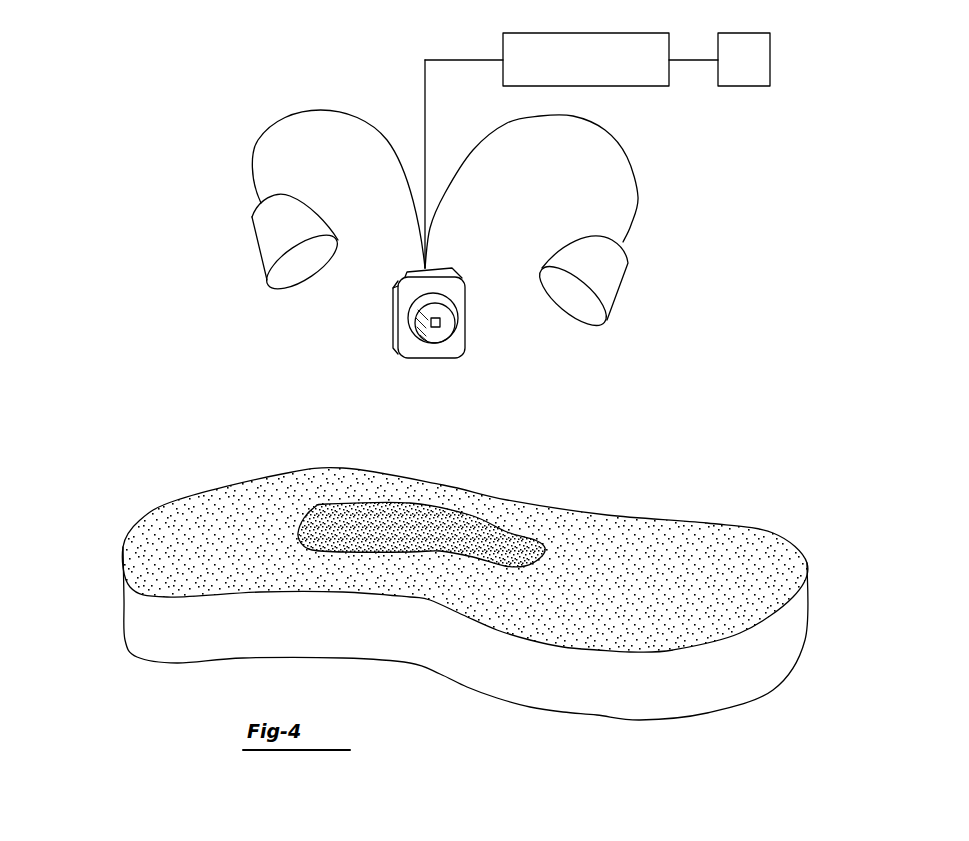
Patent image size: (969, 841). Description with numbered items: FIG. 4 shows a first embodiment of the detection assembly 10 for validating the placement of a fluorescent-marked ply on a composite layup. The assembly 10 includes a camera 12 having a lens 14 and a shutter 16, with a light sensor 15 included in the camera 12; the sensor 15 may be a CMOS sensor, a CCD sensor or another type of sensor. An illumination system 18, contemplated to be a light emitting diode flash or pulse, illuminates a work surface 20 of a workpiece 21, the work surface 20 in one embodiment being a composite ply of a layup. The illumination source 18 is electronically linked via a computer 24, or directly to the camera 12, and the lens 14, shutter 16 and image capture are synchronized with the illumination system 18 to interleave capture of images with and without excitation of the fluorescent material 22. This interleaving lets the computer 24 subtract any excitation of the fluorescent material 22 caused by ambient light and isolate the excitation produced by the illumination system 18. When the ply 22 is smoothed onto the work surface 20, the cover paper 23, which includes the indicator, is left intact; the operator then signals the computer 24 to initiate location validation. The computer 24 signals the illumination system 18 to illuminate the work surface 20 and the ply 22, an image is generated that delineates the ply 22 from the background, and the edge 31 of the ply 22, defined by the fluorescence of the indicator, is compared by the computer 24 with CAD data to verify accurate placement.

The detection assembly 10 is at (264, 64).
The camera 12 is at (465, 343).
The lens 14 is at (445, 309).
The light sensor 15 is at (438, 326).
The shutter 16 is at (415, 336).
The illumination system 18 is at (267, 239).
The work surface 20 is at (648, 555).
The workpiece 21 is at (758, 657).
The ply 22 is at (358, 514).
The cover paper 23 is at (744, 59).
The computer 24 is at (503, 42).
The edge 31 is at (421, 489).